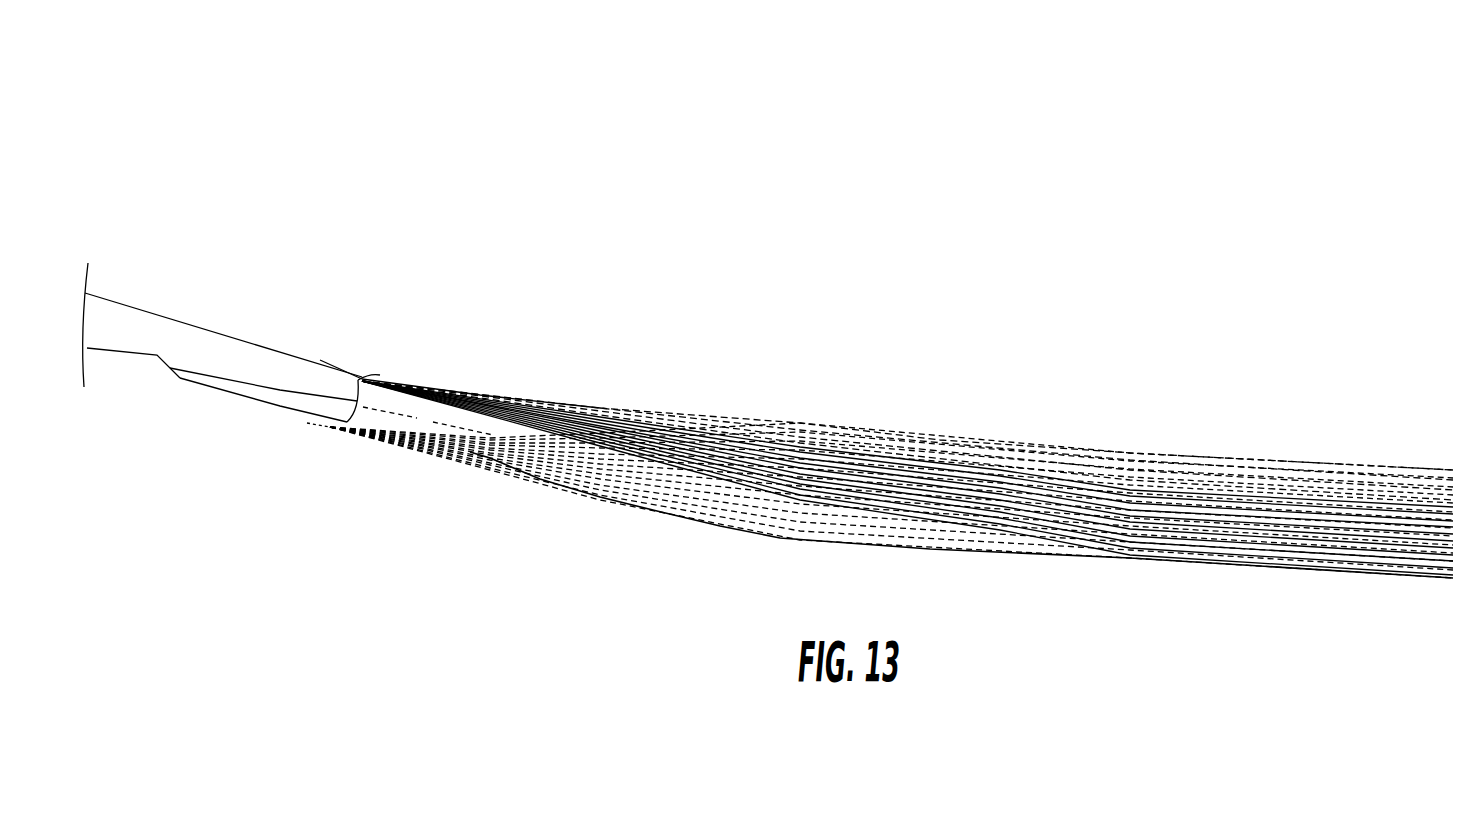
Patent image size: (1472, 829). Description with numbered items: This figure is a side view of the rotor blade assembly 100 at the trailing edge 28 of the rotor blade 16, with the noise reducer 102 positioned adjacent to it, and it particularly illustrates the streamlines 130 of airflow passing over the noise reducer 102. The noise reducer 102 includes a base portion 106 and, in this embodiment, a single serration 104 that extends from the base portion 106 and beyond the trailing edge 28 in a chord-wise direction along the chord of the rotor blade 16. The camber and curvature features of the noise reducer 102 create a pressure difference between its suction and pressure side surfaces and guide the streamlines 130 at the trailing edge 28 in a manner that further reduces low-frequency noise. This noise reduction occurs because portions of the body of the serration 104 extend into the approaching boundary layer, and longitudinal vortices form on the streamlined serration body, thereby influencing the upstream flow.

The rotor blade 16 is at (177, 318).
The trailing edge 28 is at (380, 375).
The rotor blade assembly 100 is at (625, 340).
The noise reducer 102 is at (530, 522).
The serration 104 is at (780, 538).
The base portion 106 is at (227, 392).
The streamlines 130 is at (907, 438).